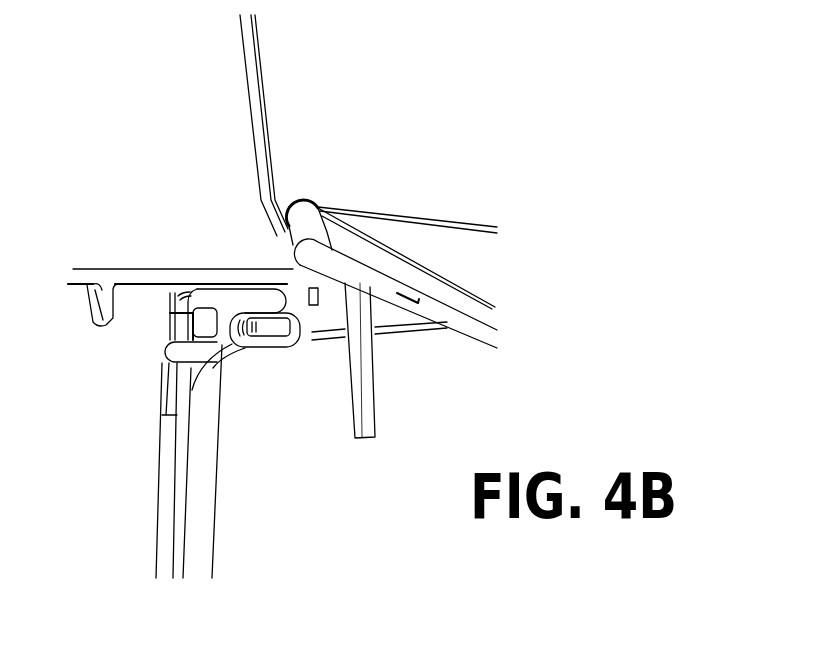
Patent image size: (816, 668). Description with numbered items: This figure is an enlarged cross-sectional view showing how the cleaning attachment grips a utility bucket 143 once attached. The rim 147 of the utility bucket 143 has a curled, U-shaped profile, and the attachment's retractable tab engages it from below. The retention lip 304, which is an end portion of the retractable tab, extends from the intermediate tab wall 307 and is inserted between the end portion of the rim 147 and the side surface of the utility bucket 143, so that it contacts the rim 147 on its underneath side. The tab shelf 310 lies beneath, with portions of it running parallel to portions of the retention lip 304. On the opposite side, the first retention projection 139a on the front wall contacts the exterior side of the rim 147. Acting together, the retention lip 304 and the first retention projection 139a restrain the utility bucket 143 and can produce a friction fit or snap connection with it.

The utility bucket 143 is at (258, 90).
The first retention projection 139a is at (300, 268).
The retention lip 304 is at (257, 297).
The rim 147 is at (277, 323).
The intermediate tab wall 307 is at (217, 322).
The tab shelf 310 is at (177, 358).